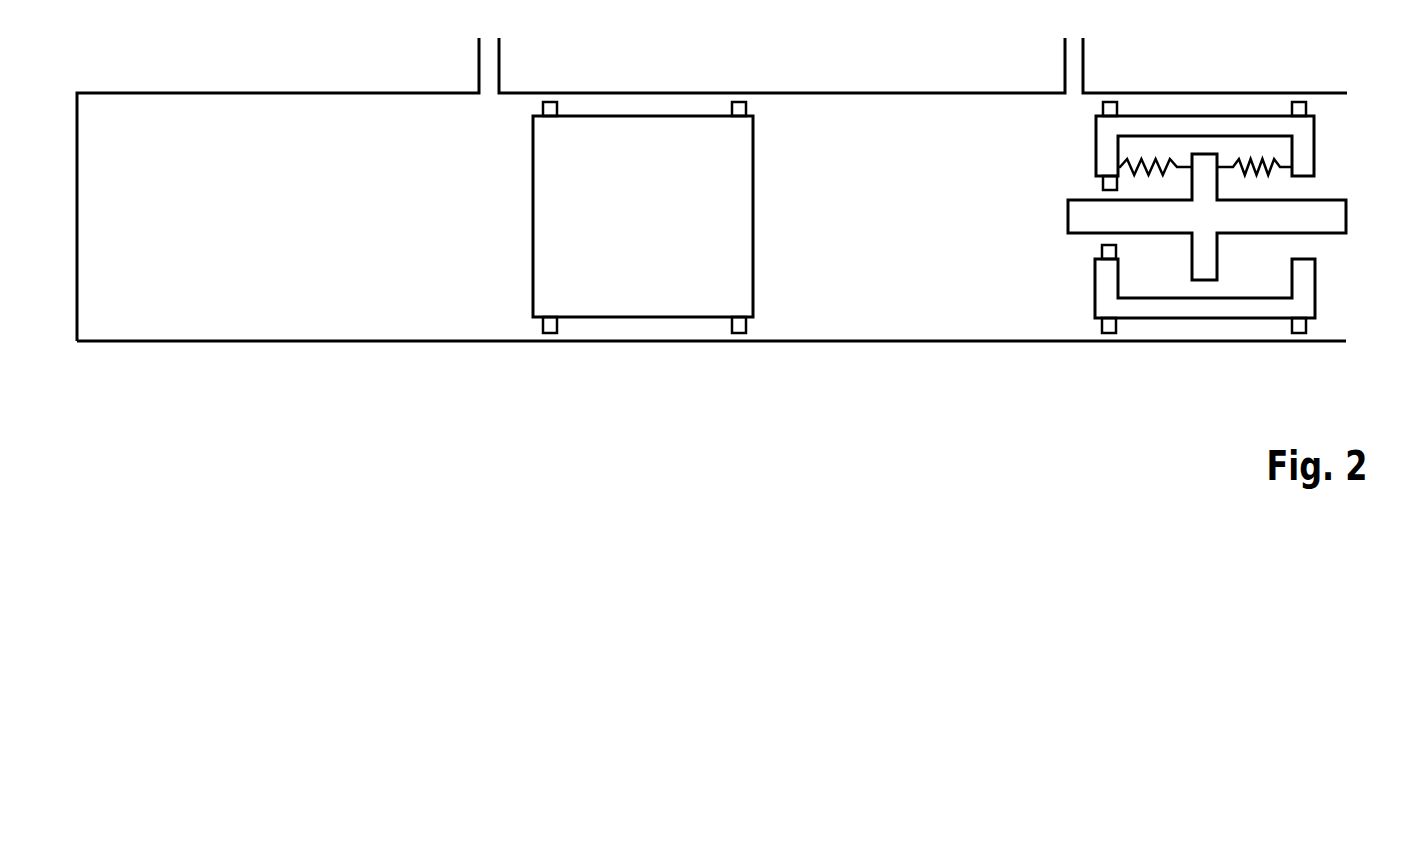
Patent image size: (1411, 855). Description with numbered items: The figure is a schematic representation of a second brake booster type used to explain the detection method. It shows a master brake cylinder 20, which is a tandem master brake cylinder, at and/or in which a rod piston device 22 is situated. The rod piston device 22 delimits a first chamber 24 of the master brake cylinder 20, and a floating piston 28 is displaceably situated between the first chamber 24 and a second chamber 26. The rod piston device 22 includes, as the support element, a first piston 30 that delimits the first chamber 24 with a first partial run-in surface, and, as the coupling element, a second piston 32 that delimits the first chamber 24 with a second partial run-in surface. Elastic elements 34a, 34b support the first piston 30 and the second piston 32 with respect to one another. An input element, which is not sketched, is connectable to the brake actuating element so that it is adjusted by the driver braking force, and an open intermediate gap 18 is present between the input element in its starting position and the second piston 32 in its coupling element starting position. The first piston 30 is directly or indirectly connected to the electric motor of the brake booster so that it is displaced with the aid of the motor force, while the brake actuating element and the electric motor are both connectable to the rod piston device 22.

The open intermediate gap 18 is at (1351, 249).
The master brake cylinder 20 is at (239, 342).
The rod piston device 22 is at (1197, 115).
The first chamber 24 is at (903, 256).
The second chamber 26 is at (339, 256).
The floating piston 28 is at (634, 256).
The first piston 30 is at (1143, 305).
The second piston 32 is at (1257, 219).
The elastic element 34a is at (1155, 155).
The elastic element 34b is at (1253, 155).